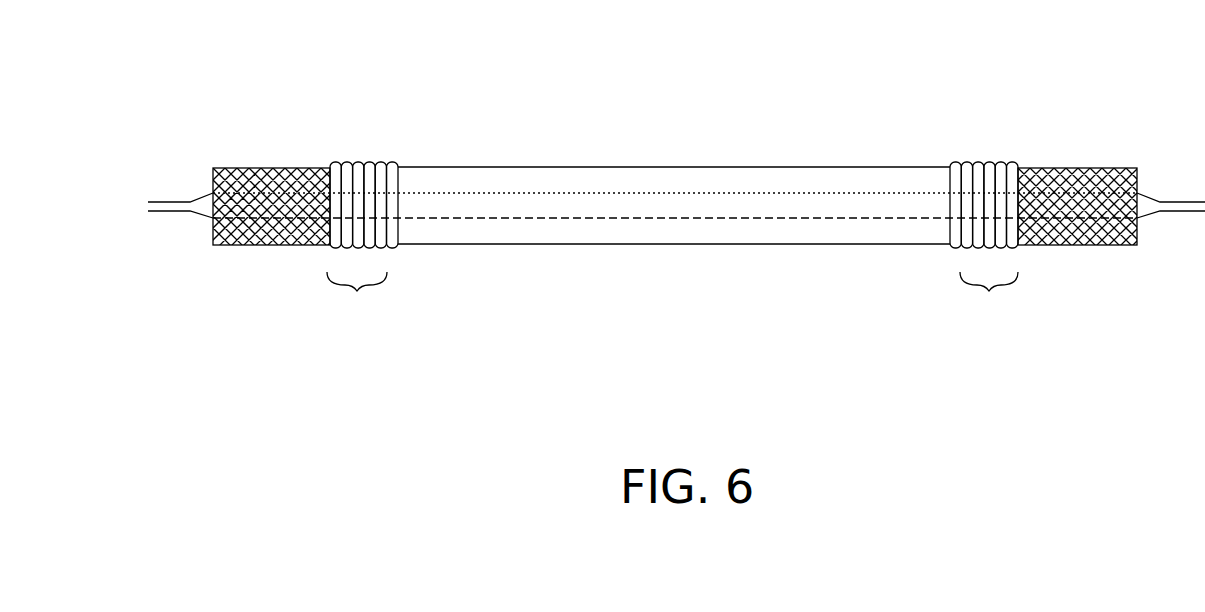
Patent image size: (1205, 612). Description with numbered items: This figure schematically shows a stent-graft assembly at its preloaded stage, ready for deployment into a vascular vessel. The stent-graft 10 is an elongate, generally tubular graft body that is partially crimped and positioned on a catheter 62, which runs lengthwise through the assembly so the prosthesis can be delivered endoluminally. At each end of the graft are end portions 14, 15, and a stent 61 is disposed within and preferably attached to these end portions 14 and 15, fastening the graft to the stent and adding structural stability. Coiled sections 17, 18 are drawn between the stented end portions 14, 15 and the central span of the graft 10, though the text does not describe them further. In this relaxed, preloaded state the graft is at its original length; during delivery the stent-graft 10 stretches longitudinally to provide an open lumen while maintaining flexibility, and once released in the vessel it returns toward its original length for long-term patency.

The stent-graft 10 is at (634, 255).
The end portion 14 is at (357, 297).
The end portion 15 is at (989, 295).
The first coil 17 is at (373, 163).
The second coil 18 is at (995, 163).
The stent 61 is at (272, 248).
The catheter 62 is at (727, 193).